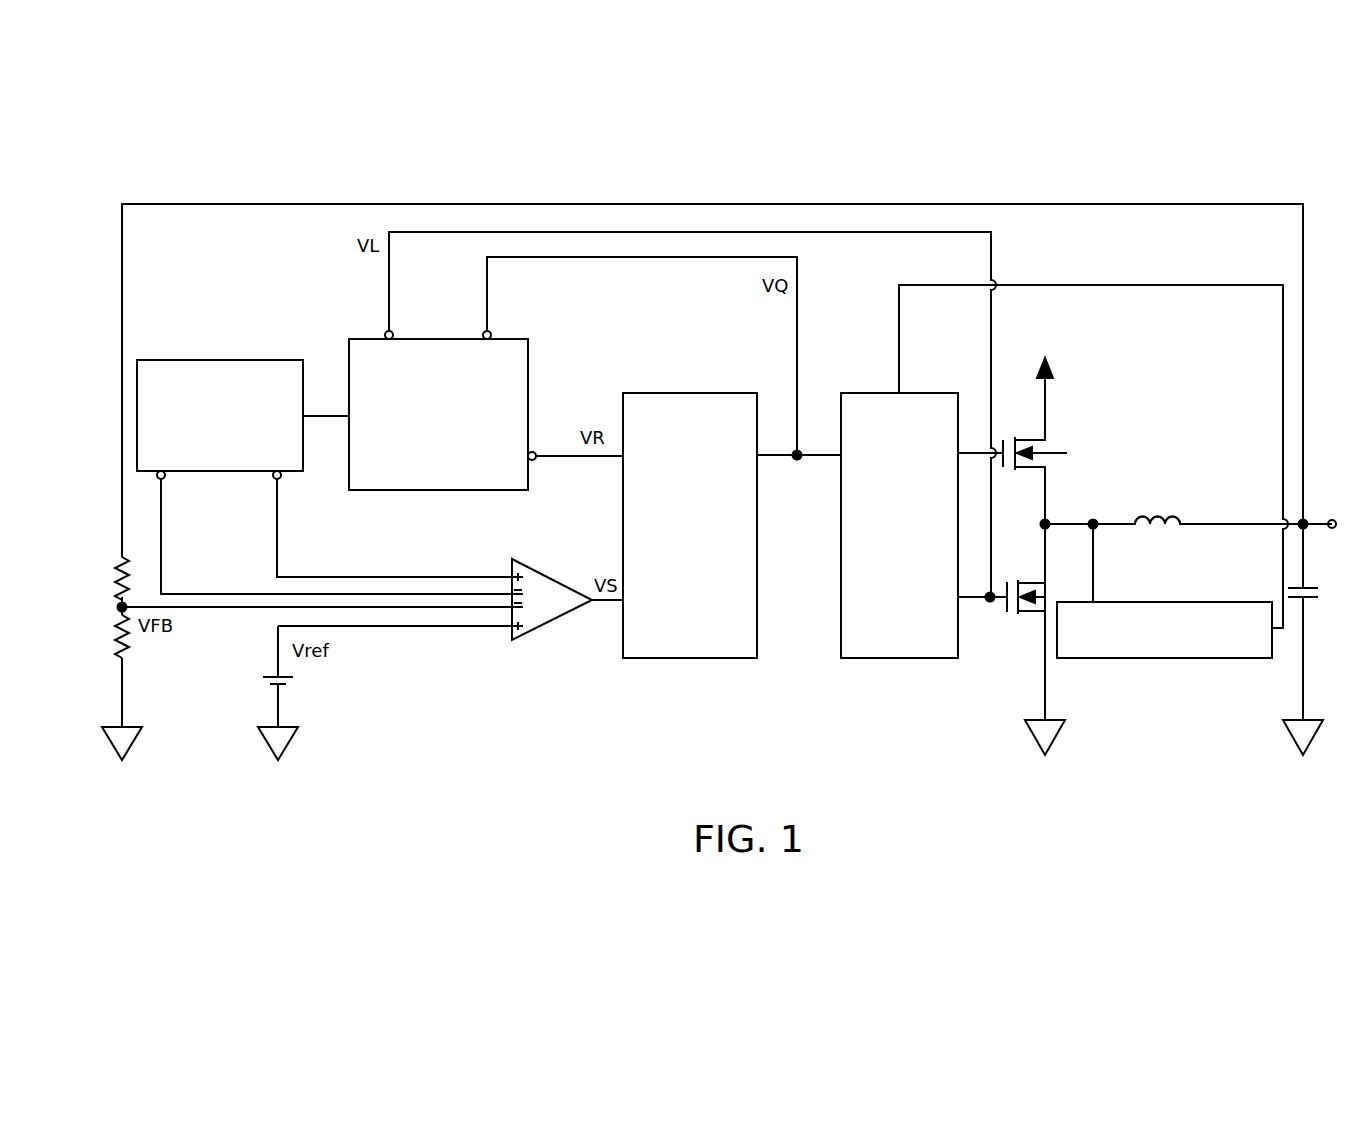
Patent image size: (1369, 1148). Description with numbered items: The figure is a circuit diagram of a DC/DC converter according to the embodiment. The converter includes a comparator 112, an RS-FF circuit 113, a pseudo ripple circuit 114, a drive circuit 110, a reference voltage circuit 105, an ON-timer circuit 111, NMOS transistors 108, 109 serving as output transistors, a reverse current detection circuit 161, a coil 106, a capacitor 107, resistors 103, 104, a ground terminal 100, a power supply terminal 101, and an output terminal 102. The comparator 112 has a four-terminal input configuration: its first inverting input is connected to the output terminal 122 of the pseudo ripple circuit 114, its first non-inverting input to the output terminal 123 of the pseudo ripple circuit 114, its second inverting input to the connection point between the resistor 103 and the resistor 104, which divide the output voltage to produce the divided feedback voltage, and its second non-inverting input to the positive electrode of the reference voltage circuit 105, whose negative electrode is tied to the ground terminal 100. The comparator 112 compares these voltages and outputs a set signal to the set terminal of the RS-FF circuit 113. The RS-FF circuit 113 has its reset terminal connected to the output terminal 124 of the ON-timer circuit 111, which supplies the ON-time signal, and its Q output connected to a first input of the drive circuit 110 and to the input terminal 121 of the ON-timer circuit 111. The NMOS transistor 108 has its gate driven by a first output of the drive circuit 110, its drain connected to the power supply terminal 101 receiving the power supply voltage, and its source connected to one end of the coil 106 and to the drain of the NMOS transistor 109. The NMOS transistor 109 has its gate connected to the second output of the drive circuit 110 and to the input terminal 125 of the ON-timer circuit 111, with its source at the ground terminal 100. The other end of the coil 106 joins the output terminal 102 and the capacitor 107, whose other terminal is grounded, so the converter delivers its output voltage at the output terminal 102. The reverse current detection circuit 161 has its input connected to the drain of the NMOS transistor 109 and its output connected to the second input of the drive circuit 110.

The ground terminal 100 is at (108, 744).
The power supply terminal 101 is at (1050, 372).
The output terminal 102 is at (1332, 519).
The resistor 103 is at (120, 576).
The resistor 104 is at (120, 631).
The reference voltage circuit 105 is at (288, 680).
The coil 106 is at (1158, 511).
The capacitor 107 is at (1318, 598).
The NMOS transistor 108 is at (1067, 455).
The NMOS transistor 109 is at (1007, 612).
The drive circuit 110 is at (905, 660).
The ON-timer circuit 111 is at (440, 492).
The comparator 112 is at (552, 630).
The RS-FF circuit 113 is at (690, 660).
The pseudo ripple circuit 114 is at (240, 472).
The input terminal of the ON-timer circuit 121 is at (491, 333).
The output terminal of the pseudo ripple circuit 122 is at (165, 478).
The output terminal of the pseudo ripple circuit 123 is at (281, 478).
The output terminal of the ON-timer circuit 124 is at (536, 460).
The input terminal of the ON-timer circuit 125 is at (393, 333).
The reverse current detection circuit 161 is at (1165, 660).